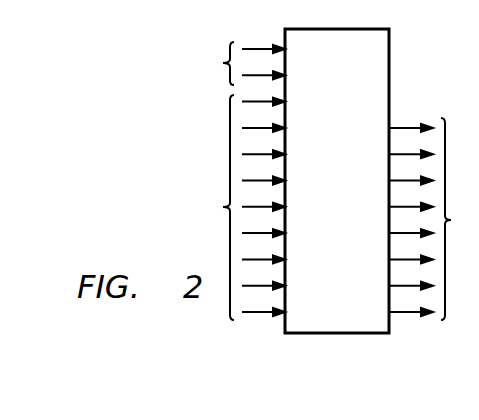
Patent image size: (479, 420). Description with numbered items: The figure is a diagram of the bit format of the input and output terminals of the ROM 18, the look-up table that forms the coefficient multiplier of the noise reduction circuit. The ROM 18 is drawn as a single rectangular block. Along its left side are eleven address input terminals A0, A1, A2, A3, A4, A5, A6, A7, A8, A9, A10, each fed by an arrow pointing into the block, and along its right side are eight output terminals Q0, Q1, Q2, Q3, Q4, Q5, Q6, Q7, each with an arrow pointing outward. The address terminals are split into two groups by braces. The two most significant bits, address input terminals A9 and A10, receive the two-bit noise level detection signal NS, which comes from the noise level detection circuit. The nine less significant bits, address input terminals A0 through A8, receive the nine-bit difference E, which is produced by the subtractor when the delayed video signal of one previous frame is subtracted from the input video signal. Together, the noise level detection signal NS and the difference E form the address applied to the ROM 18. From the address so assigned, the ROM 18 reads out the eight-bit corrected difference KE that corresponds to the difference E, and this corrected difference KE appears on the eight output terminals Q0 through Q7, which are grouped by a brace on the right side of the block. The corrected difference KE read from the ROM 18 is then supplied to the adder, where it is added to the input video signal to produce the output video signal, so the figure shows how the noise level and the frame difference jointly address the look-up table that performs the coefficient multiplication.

The ROM 18 is at (390, 74).
The noise level detection signal NS is at (213, 63).
The difference E is at (220, 207).
The corrected difference KE is at (459, 219).
The address input terminal A0 is at (278, 313).
The address input terminal A1 is at (278, 287).
The address input terminal A2 is at (278, 260).
The address input terminal A3 is at (278, 234).
The address input terminal A4 is at (278, 208).
The address input terminal A5 is at (278, 182).
The address input terminal A6 is at (278, 155).
The address input terminal A7 is at (278, 129).
The address input terminal A8 is at (278, 103).
The address input terminal A9 is at (278, 76).
The address input terminal A10 is at (282, 50).
The output terminal Q0 is at (395, 313).
The output terminal Q1 is at (395, 287).
The output terminal Q2 is at (395, 260).
The output terminal Q3 is at (395, 234).
The output terminal Q4 is at (395, 208).
The output terminal Q5 is at (395, 182).
The output terminal Q6 is at (395, 155).
The output terminal Q7 is at (395, 129).